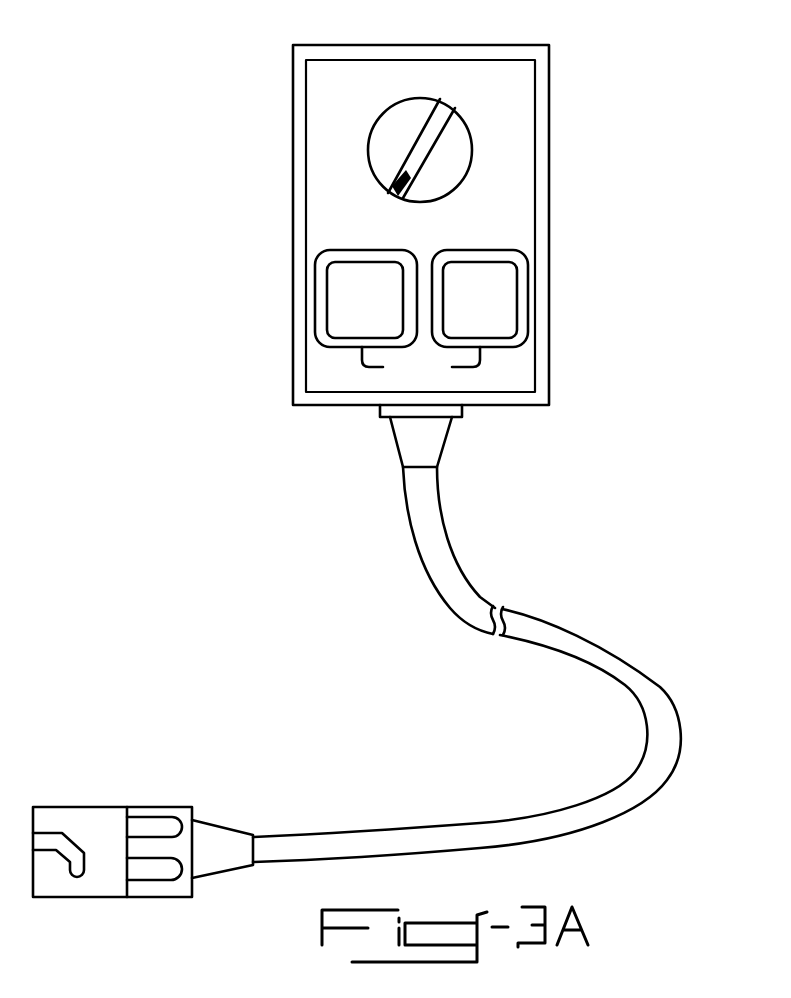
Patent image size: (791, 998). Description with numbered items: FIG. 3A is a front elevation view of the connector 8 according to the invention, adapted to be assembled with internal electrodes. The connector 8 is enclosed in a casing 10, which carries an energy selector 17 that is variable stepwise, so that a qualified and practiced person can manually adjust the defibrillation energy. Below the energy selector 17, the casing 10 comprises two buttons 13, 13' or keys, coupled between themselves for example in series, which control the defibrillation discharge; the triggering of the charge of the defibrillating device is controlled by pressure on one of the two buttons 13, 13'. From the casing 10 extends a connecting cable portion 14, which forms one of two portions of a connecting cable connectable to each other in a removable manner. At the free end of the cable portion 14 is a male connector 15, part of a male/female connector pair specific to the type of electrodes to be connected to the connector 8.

The connector 8 is at (597, 168).
The casing 10 is at (549, 362).
The energy selector 17 is at (456, 145).
The button 13 is at (534, 283).
The button 13' is at (541, 302).
The connecting cable portion 14 is at (572, 635).
The male connector 15 is at (88, 817).